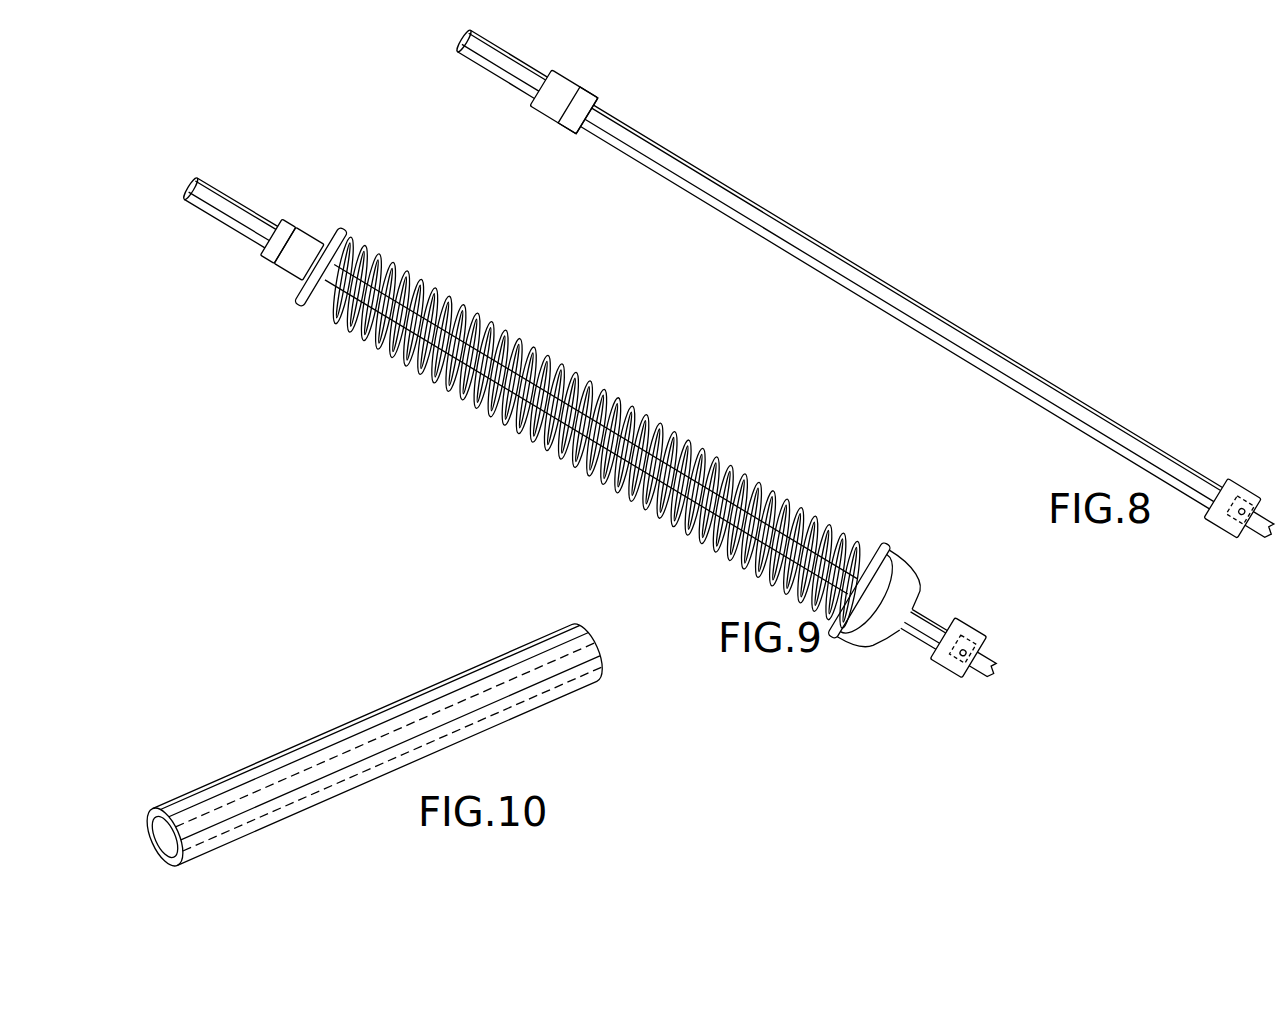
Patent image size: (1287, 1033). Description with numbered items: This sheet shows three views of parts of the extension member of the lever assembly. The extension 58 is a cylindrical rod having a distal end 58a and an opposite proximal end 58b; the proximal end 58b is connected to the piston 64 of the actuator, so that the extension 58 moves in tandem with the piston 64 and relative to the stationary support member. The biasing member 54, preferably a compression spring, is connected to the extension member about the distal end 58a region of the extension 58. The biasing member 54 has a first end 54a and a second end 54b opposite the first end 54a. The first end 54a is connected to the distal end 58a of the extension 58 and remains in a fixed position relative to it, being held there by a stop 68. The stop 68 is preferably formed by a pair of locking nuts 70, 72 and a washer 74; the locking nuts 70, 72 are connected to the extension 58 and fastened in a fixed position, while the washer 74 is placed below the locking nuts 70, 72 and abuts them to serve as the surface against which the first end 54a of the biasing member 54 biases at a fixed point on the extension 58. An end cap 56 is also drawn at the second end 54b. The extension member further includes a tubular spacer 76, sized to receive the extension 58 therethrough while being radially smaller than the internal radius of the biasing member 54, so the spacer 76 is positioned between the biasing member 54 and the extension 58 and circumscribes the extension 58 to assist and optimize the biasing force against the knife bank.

In FIG. 9, the biasing member 54 is at (612, 392).
In FIG. 9, the first end of the biasing member 54a is at (371, 225).
In FIG. 9, the second end of the biasing member 54b is at (869, 552).
In FIG. 9, the dome-shaped end cap 56 is at (912, 584).
In FIG. 8, the extension 58 is at (863, 268).
In FIG. 9, the extension 58 is at (228, 196).
In FIG. 8, the distal end of the extension 58a is at (520, 47).
In FIG. 8, the proximal end of the extension 58b is at (1229, 470).
In FIG. 8, the piston 64 is at (1244, 486).
In FIG. 9, the piston 64 is at (975, 628).
In FIG. 9, the stop 68 is at (331, 216).
In FIG. 8, the locking nut 70 is at (546, 116).
In FIG. 9, the locking nut 70 is at (265, 262).
In FIG. 8, the locking nut 72 is at (575, 132).
In FIG. 9, the locking nut 72 is at (292, 276).
In FIG. 9, the washer 74 is at (300, 304).
In FIG. 9, the spacer 76 is at (687, 514).
In FIG. 10, the spacer 76 is at (430, 690).